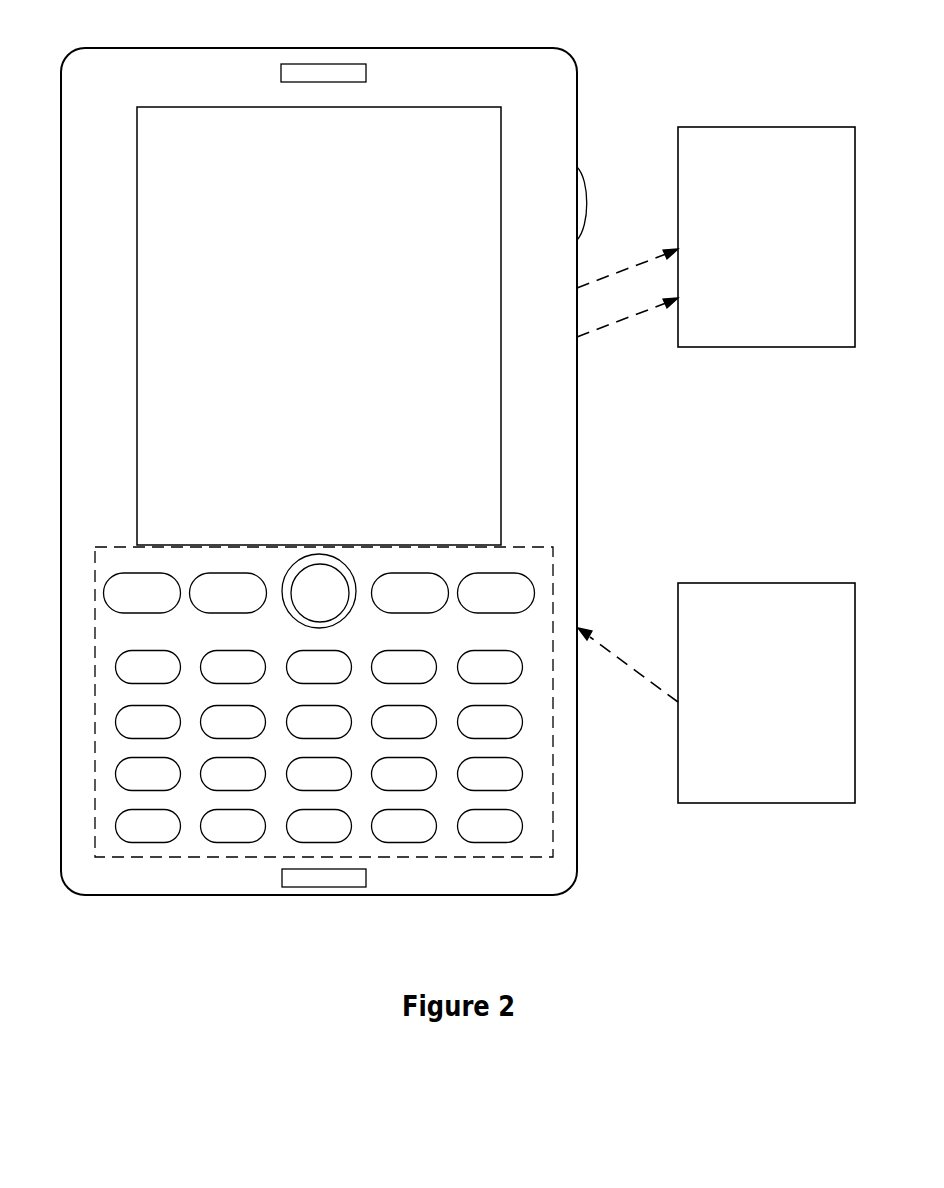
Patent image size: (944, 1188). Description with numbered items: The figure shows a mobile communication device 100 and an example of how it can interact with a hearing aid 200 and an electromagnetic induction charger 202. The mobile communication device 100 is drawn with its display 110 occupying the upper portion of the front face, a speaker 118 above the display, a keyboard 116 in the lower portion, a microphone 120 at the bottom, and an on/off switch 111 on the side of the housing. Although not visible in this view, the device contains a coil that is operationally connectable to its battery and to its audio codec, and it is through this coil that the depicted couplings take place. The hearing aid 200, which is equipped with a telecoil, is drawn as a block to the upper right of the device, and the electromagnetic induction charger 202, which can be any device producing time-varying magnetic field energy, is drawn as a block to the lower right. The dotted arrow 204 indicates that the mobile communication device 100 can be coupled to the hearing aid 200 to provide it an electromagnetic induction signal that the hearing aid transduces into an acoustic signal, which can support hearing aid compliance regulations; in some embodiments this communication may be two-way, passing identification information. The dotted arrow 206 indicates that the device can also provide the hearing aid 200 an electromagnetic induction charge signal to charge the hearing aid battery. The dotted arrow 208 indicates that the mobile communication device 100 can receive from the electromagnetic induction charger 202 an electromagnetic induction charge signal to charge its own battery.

The mobile communication device 100 is at (188, 48).
The display 110 is at (427, 150).
The on/off switch 111 is at (583, 172).
The keyboard 116 is at (188, 858).
The speaker 118 is at (347, 64).
The microphone 120 is at (350, 887).
The hearing aid 200 is at (765, 127).
The electromagnetic induction charger 202 is at (755, 803).
The dotted arrow 204 is at (648, 263).
The dotted arrow 206 is at (670, 303).
The dotted arrow 208 is at (658, 688).